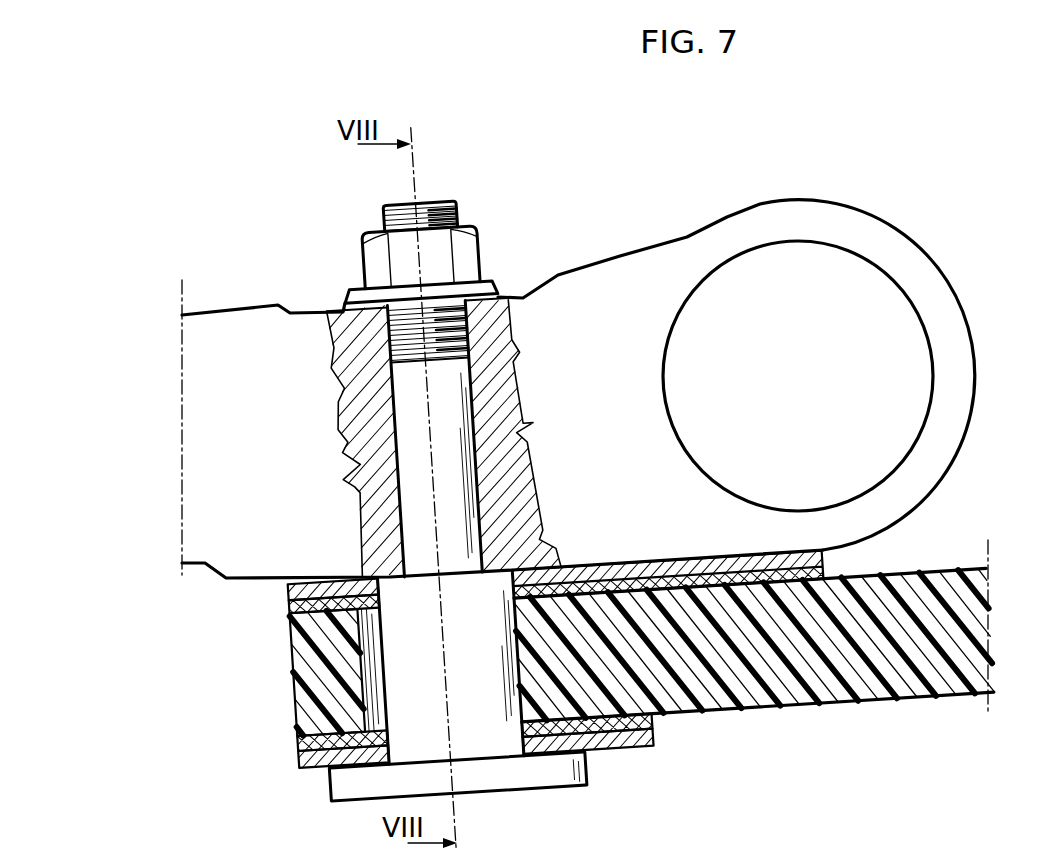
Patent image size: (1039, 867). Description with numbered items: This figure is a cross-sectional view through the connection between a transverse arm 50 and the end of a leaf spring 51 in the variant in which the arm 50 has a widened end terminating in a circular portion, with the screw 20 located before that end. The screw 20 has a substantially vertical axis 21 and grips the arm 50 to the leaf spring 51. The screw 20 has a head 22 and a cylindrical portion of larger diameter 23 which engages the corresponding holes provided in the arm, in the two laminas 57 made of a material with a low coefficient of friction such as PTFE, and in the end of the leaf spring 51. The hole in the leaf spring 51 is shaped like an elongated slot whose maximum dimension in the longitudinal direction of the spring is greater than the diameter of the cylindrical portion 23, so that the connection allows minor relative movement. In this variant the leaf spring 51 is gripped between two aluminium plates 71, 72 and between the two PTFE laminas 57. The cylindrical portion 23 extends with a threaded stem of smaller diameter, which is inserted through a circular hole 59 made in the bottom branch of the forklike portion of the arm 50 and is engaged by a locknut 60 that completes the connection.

The screw 20 is at (467, 505).
The axis 21 is at (418, 184).
The head 22 is at (459, 806).
The cylindrical portion of larger diameter 23 is at (473, 626).
The transverse arm 50 is at (578, 371).
The leaf spring 51 is at (850, 720).
The laminas 57 is at (287, 613).
The circular hole 59 is at (401, 408).
The locknut 60 is at (462, 258).
The aluminium plate 71 is at (282, 597).
The aluminium plate 72 is at (293, 766).